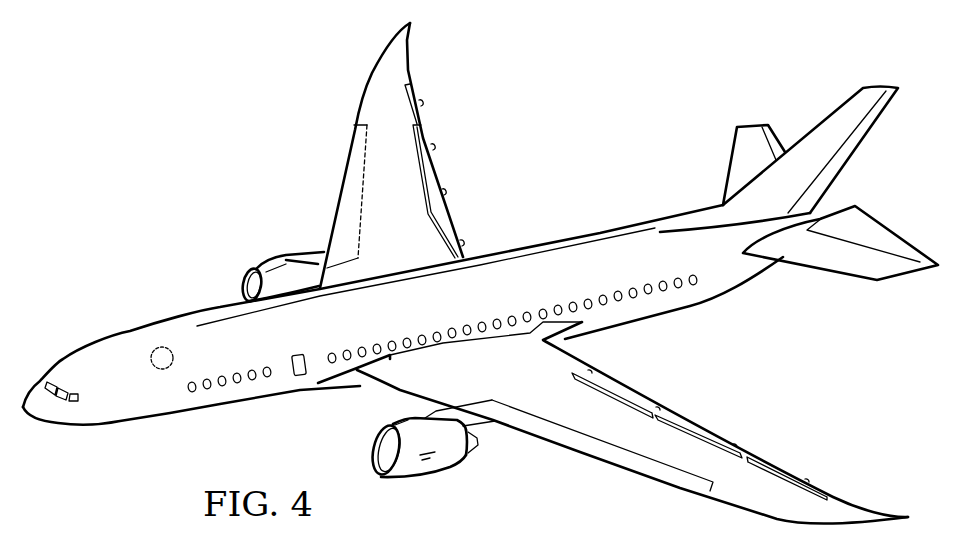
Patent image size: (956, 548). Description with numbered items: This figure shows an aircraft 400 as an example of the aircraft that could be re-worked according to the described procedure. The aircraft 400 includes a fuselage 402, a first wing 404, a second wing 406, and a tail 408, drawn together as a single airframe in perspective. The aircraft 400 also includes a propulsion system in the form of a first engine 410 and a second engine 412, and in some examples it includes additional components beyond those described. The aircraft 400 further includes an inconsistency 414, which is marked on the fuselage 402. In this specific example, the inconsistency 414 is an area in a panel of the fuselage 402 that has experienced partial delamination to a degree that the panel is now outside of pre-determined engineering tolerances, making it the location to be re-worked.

The aircraft 400 is at (206, 123).
The fuselage 402 is at (575, 235).
The first wing 404 is at (387, 43).
The second wing 406 is at (621, 468).
The tail 408 is at (872, 85).
The first engine 410 is at (270, 255).
The second engine 412 is at (434, 478).
The inconsistency 414 is at (152, 358).